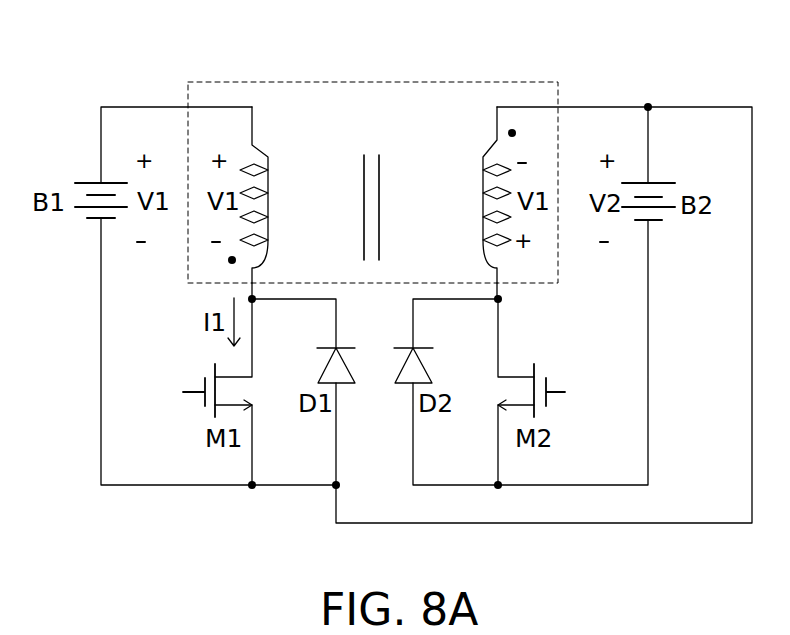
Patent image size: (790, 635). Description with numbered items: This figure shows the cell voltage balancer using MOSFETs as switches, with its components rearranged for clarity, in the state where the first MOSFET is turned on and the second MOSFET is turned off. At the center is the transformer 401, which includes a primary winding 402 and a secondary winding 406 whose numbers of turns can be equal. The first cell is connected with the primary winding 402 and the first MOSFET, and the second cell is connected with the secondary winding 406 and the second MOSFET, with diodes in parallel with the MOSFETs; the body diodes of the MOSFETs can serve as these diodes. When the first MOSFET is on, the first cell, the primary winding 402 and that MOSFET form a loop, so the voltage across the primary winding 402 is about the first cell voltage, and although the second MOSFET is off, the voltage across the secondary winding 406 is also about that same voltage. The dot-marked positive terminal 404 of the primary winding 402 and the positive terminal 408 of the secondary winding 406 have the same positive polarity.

The transformer 401 is at (373, 82).
The primary winding 402 is at (275, 150).
The positive terminal 404 is at (250, 265).
The secondary winding 406 is at (480, 149).
The positive terminal 408 is at (497, 140).